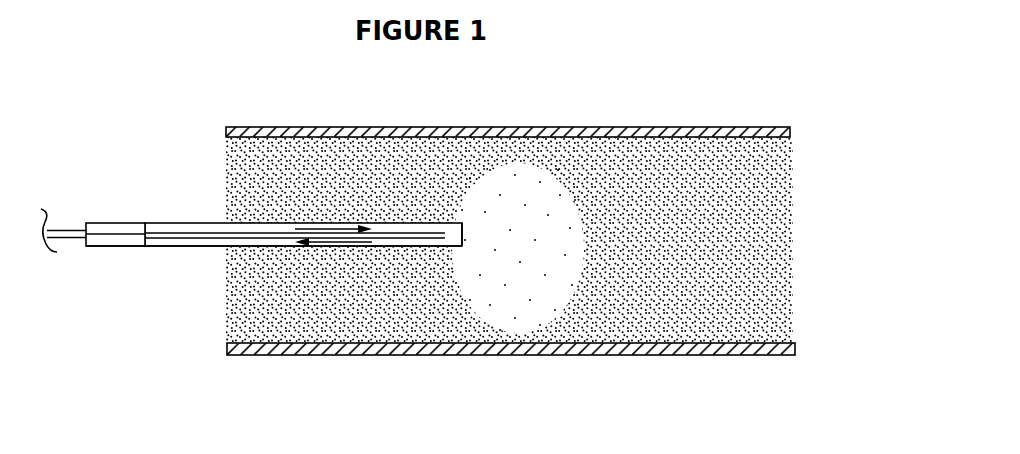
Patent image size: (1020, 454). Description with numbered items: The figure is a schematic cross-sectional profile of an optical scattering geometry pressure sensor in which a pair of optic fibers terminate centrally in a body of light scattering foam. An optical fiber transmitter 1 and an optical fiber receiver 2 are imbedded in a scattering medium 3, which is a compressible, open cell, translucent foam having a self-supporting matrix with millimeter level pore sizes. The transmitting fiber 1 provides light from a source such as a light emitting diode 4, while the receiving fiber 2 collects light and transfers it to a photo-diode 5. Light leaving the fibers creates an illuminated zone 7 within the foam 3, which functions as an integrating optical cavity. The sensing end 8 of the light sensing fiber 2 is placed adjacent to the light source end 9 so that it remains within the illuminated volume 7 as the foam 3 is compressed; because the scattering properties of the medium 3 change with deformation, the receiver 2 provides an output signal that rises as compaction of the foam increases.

The optical fiber transmitter 1 is at (208, 232).
The optical fiber receiver 2 is at (205, 240).
The scattering medium 3 is at (770, 210).
The light emitting diode 4 is at (121, 230).
The photo-diode 5 is at (123, 242).
The illuminated zone 7 is at (527, 237).
The sensing end 8 is at (447, 240).
The light source end 9 is at (440, 229).